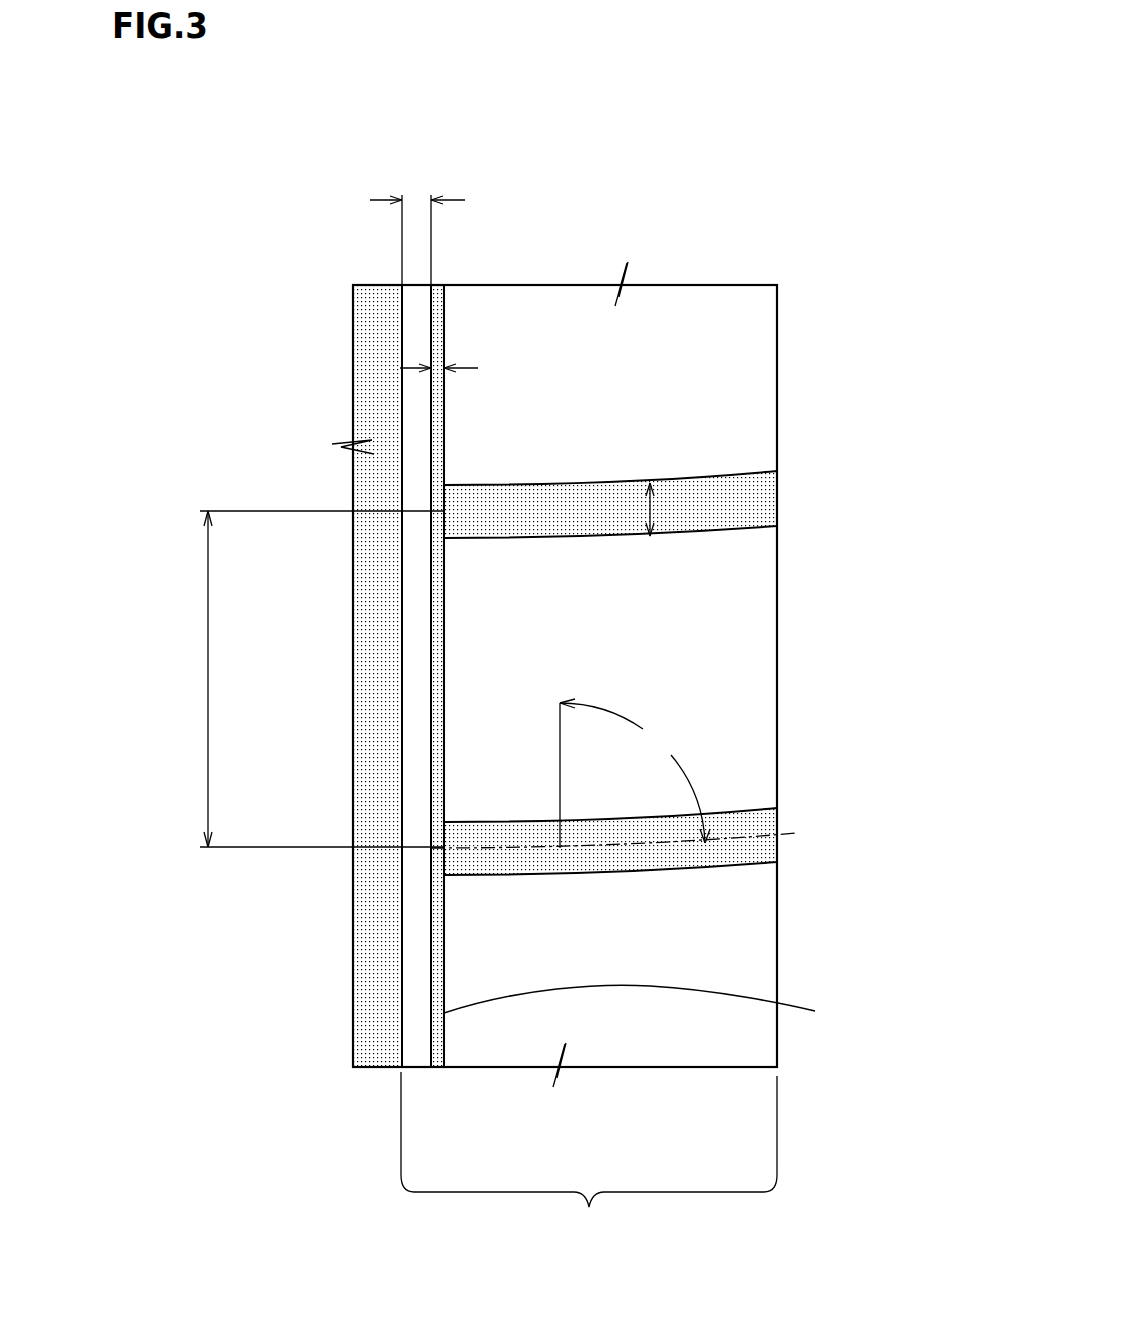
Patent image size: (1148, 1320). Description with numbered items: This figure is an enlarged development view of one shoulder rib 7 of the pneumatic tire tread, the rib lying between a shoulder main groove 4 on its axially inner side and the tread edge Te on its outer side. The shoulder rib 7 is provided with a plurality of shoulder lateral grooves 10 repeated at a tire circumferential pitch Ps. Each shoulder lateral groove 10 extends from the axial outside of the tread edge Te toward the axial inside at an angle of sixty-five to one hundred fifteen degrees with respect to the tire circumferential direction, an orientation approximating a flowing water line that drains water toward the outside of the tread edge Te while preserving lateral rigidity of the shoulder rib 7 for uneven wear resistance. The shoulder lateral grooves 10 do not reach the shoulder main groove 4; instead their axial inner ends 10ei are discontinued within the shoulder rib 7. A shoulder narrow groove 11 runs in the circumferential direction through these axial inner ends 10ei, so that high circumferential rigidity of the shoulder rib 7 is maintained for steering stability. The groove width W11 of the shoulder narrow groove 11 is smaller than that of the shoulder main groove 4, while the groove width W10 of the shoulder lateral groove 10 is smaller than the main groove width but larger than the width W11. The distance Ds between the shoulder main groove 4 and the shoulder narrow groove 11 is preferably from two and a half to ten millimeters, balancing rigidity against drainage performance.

The shoulder main groove 4 is at (378, 1030).
The shoulder rib 7 is at (589, 766).
The shoulder lateral groove 10 is at (700, 533).
The axial inner end of shoulder lateral groove 10ei is at (458, 566).
The shoulder narrow groove 11 is at (649, 1006).
The tread edge Te is at (778, 332).
The distance between shoulder main groove and shoulder narrow groove Ds is at (417, 225).
The groove width of shoulder narrow groove W11 is at (455, 353).
The groove width of shoulder lateral groove W10 is at (651, 508).
The tire circumferential pitch Ps is at (317, 679).